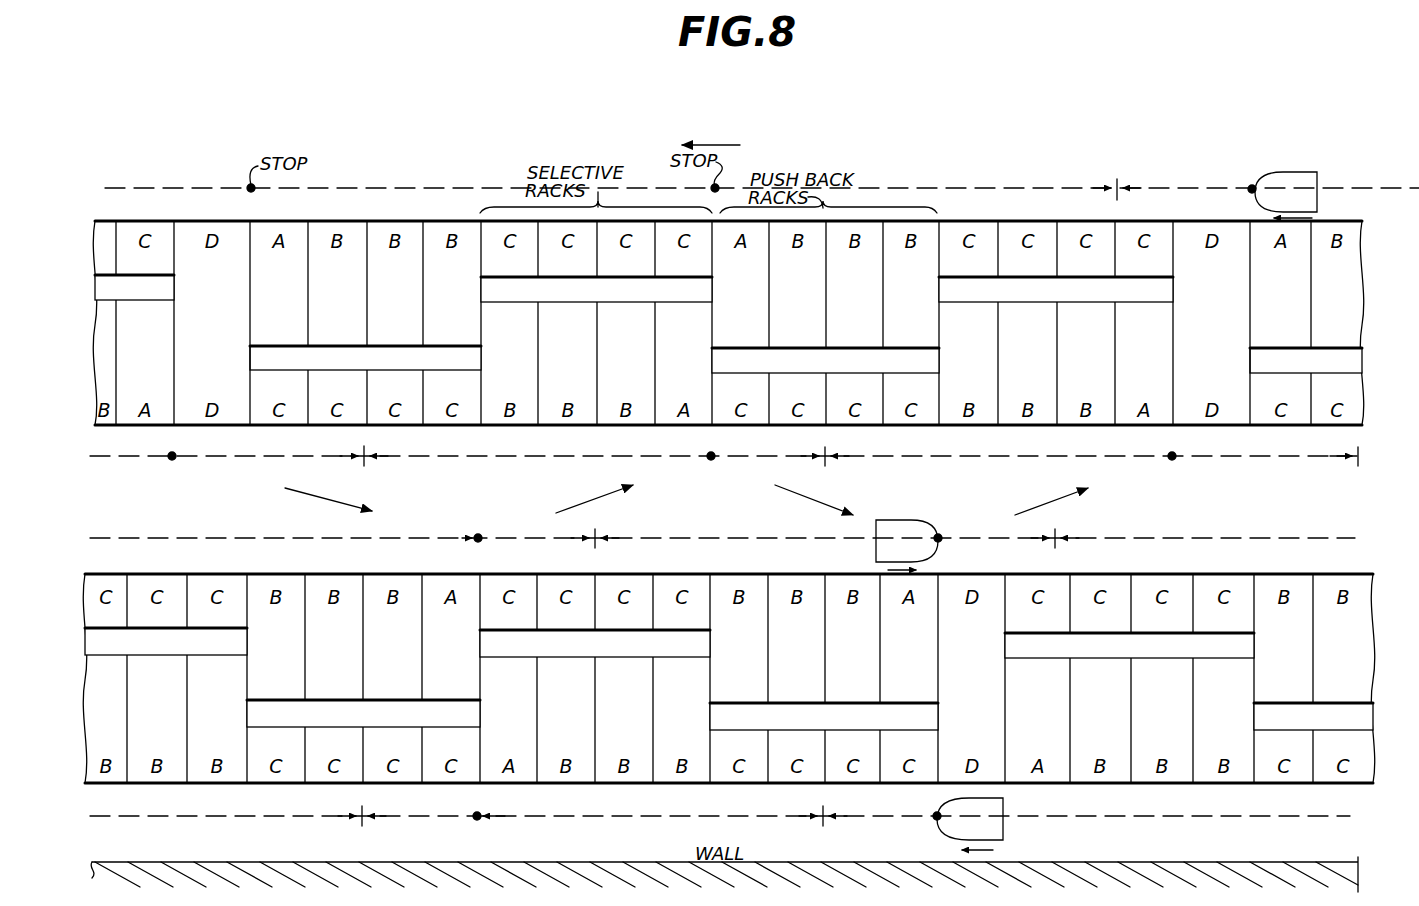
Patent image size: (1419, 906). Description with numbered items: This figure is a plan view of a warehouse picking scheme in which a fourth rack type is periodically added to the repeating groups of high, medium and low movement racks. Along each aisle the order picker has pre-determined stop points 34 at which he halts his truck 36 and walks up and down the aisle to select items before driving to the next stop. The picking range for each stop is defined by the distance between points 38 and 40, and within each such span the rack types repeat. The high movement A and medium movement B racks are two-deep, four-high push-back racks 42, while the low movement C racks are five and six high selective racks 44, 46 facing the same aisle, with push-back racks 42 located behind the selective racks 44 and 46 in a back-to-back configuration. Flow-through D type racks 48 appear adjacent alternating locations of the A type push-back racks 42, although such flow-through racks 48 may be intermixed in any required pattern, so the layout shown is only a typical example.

The stop point 34 is at (1250, 189).
The truck 36 is at (1283, 172).
The point 38 is at (365, 462).
The point 40 is at (826, 464).
The push-back rack 42 is at (126, 314).
The selective rack 44 is at (276, 378).
The selective rack 46 is at (333, 378).
The flow-through rack 48 is at (225, 425).